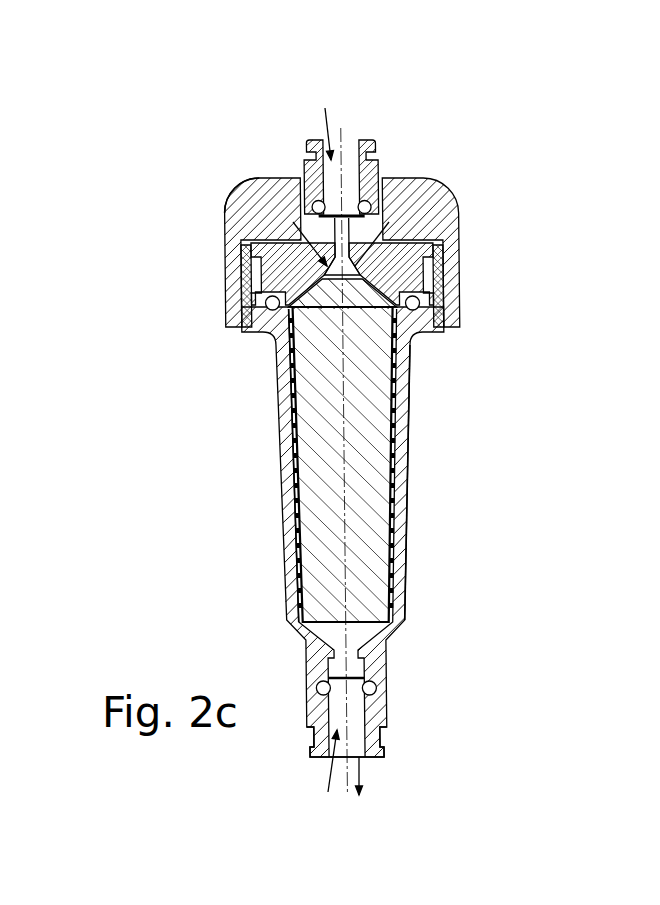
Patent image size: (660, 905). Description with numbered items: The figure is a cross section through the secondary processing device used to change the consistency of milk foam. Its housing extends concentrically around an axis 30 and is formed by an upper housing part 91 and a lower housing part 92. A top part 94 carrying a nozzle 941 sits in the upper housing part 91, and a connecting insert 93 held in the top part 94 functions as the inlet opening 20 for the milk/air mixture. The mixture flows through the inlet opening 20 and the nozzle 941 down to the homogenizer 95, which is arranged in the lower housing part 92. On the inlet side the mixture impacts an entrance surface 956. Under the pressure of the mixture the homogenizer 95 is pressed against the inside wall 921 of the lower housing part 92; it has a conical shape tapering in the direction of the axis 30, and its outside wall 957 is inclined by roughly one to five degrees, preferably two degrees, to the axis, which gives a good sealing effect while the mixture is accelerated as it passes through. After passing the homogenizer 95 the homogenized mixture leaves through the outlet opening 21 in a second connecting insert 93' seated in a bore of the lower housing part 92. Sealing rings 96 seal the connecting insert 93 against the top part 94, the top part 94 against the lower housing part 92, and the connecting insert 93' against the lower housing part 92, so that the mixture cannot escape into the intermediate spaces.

The inlet opening 20 is at (325, 120).
The outlet opening 21 is at (324, 774).
The axis 30 is at (380, 776).
The upper housing part 91 is at (440, 215).
The lower housing part 92 is at (406, 527).
The connecting insert 93 is at (413, 162).
The connecting insert 93' is at (428, 754).
The top part 94 is at (287, 263).
The nozzle 941 is at (347, 244).
The homogenizer 95 is at (330, 445).
The entrance surface 956 is at (252, 203).
The outside wall 957 is at (407, 377).
The inside wall 921 is at (300, 373).
The sealing rings 96 is at (312, 208).